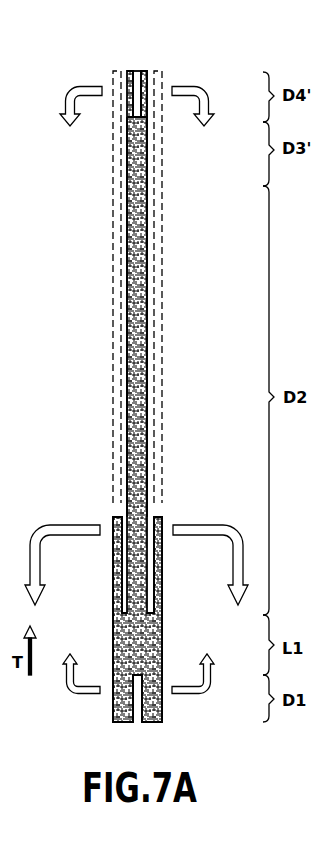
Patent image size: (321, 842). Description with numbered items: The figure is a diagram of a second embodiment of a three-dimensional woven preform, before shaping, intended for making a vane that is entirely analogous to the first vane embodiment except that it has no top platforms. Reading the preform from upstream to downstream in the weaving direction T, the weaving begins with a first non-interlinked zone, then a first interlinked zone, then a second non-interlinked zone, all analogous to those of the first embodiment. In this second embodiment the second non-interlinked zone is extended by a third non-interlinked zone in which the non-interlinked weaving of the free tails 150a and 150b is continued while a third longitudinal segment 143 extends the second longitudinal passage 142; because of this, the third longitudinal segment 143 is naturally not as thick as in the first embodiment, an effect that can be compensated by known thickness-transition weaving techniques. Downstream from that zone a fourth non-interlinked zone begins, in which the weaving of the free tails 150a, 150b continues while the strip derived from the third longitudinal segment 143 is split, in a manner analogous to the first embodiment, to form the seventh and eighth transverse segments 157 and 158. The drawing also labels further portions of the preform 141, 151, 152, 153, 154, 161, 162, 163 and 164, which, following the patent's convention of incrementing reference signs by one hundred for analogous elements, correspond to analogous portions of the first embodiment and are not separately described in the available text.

The base portion 141 is at (116, 646).
The second longitudinal passage 142 is at (128, 365).
The third longitudinal segment 143 is at (127, 148).
The free tail 150a is at (156, 335).
The free tail 150b is at (113, 335).
The first side wall 151 is at (162, 575).
The second side wall 152 is at (113, 575).
The first leg 153 is at (162, 715).
The second leg 154 is at (113, 714).
The seventh transverse segment 157 is at (144, 71).
The eighth transverse segment 158 is at (128, 71).
The bottom slot 161 is at (137, 698).
The first side surface 162 is at (149, 406).
The second side surface 163 is at (125, 407).
The top slot 164 is at (136, 90).